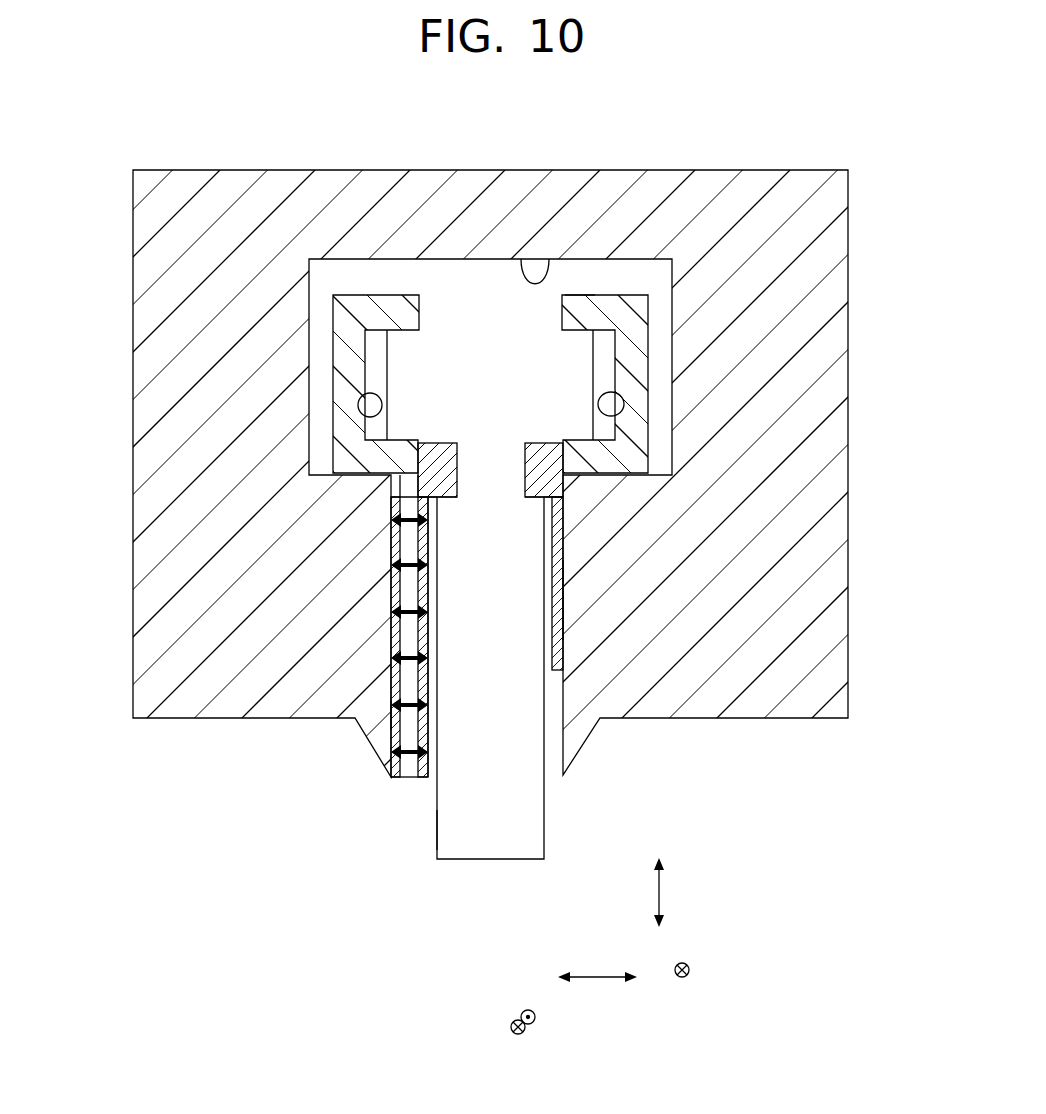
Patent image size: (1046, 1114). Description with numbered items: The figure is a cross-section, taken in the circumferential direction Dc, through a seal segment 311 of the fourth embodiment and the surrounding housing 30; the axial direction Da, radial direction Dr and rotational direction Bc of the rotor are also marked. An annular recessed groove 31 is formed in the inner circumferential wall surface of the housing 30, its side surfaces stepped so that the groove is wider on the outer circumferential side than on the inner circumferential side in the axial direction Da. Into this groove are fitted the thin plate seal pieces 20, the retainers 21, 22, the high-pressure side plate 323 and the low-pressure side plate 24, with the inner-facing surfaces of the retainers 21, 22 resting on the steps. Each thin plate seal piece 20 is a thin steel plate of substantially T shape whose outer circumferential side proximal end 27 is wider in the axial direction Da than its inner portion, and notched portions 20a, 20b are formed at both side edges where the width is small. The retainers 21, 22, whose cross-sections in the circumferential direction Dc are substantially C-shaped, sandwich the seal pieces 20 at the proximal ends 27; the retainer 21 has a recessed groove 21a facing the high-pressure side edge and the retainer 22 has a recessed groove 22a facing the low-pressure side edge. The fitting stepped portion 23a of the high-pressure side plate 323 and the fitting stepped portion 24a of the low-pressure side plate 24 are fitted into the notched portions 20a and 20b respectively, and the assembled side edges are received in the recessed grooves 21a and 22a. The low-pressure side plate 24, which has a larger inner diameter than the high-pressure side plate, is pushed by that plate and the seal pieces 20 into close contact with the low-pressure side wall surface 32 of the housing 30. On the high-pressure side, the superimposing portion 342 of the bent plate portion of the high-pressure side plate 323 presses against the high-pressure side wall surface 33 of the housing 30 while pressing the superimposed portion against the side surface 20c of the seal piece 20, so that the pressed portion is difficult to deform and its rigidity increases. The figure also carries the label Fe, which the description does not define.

The housing 30 is at (835, 268).
The annular recessed groove 31 is at (548, 258).
The seal segment 311 is at (578, 295).
The outer circumferential side proximal end 27 is at (490, 342).
The retainer 21 is at (345, 362).
The retainer 22 is at (630, 367).
The recessed groove 21a is at (375, 404).
The recessed groove 22a is at (606, 413).
The fitting stepped portion 23a is at (440, 470).
The fitting stepped portion 24a is at (541, 470).
The thin plate seal pieces 20 is at (457, 672).
The notched portion 20a is at (451, 498).
The notched portion 20b is at (532, 498).
The side surface 20c is at (437, 828).
The high-pressure side wall surface 33 is at (400, 598).
The low-pressure side plate 24 is at (563, 590).
The low-pressure side wall surface 32 is at (558, 660).
The superimposing portion 342 is at (391, 713).
The high-pressure side plate 323 is at (411, 788).
The elastic force Fe is at (405, 778).
The radial direction Dr is at (677, 892).
The axial direction Da is at (597, 996).
The rotational direction Bc is at (699, 974).
The circumferential direction Dc is at (511, 1008).